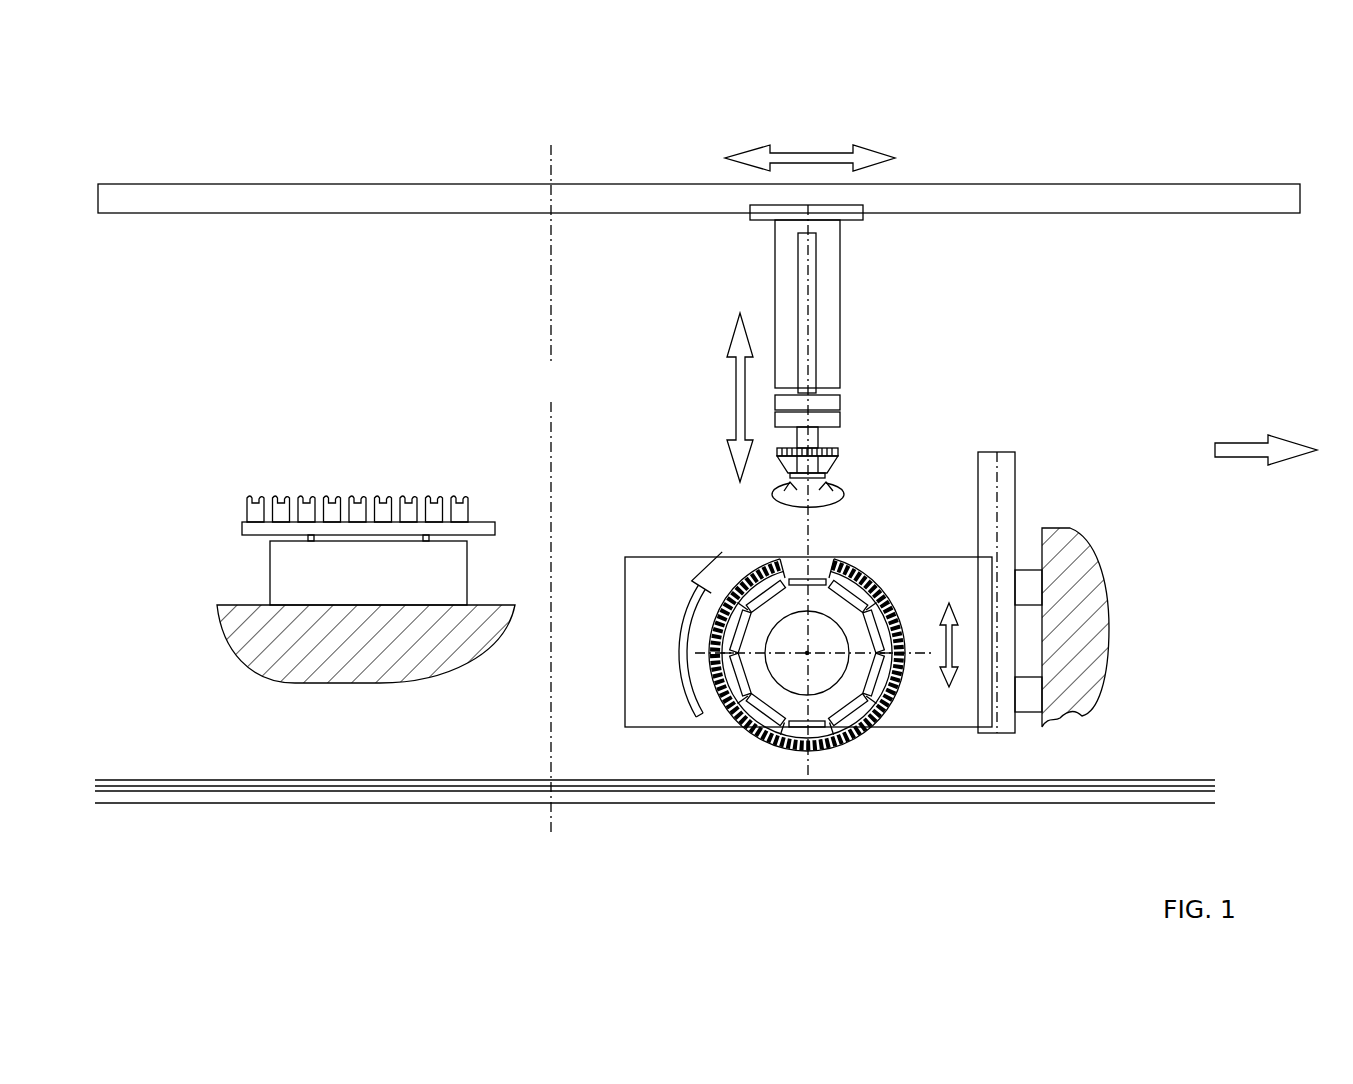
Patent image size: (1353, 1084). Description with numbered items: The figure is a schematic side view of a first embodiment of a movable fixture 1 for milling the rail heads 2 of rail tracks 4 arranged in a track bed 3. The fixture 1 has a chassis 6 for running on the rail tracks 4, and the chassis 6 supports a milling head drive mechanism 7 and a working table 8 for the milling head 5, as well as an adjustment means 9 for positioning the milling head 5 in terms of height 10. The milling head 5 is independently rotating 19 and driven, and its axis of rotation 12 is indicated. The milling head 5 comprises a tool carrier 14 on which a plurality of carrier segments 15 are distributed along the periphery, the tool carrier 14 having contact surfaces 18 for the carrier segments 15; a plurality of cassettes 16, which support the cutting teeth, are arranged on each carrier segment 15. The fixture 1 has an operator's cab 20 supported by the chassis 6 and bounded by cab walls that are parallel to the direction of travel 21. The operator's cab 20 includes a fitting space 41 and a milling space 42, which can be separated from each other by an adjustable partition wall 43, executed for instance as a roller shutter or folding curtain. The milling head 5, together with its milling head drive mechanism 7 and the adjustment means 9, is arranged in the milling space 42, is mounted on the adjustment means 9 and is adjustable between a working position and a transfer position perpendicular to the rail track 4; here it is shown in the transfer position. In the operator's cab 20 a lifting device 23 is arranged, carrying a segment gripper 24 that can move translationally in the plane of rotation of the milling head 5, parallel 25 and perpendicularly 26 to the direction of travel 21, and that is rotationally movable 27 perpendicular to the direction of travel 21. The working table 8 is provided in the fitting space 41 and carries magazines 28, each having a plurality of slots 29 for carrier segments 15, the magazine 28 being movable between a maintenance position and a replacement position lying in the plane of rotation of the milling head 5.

The movable fixture 1 is at (1196, 333).
The rail head 2 is at (1145, 779).
The track bed 3 is at (1051, 836).
The rail track 4 is at (1126, 797).
The milling head 5 is at (893, 586).
The chassis 6 is at (285, 643).
The milling head drive mechanism 7 is at (819, 673).
The working table 8 is at (361, 444).
The adjustment means 9 is at (1004, 497).
The height 10 is at (955, 654).
The axis of rotation 12 is at (802, 660).
The tool carrier 14 is at (856, 632).
The carrier segment 15 is at (827, 465).
The cassette 16 is at (862, 571).
The contact surface 18 is at (800, 571).
The rotation 19 is at (683, 638).
The operator's cab 20 is at (553, 490).
The direction of travel 21 is at (1243, 450).
The lifting device 23 is at (828, 326).
The segment gripper 24 is at (849, 437).
The parallel movement 25 is at (813, 157).
The perpendicular movement 26 is at (737, 408).
The rotational movement 27 is at (803, 507).
The magazine 28 is at (479, 527).
The slot 29 is at (266, 497).
The fitting space 41 is at (496, 306).
The milling space 42 is at (613, 306).
The adjustable partition wall 43 is at (552, 254).